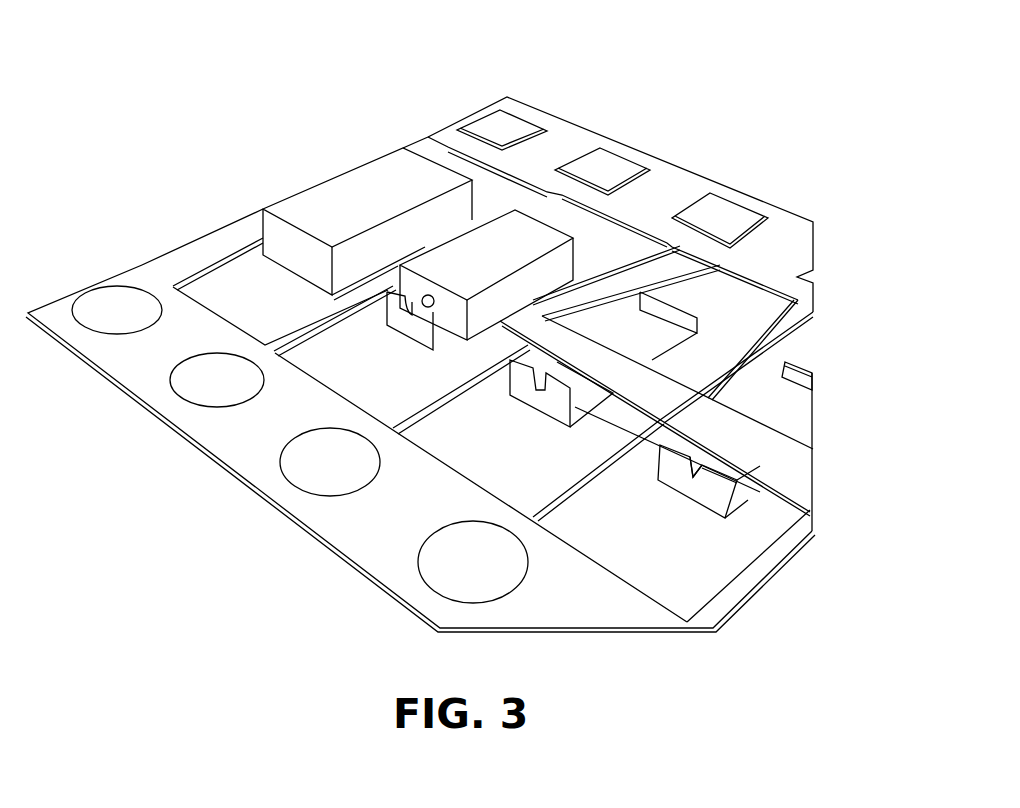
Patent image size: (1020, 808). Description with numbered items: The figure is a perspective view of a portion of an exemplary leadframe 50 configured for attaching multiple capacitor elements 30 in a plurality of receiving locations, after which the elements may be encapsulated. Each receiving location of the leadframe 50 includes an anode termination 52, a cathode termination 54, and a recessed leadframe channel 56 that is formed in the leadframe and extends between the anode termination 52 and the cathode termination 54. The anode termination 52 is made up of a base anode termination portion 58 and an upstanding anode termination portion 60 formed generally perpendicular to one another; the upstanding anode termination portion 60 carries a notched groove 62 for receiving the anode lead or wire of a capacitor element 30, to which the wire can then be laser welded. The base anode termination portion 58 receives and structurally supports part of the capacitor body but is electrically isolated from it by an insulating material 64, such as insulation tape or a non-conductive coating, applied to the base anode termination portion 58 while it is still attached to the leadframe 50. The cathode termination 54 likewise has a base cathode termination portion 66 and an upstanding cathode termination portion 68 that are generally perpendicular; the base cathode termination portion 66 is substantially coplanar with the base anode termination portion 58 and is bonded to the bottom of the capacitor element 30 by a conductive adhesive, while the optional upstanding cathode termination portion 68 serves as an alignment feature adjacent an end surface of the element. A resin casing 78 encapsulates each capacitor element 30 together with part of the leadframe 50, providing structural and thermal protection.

The capacitor element 30 is at (505, 242).
The leadframe 50 is at (138, 272).
The anode termination 52 is at (597, 425).
The cathode termination 54 is at (675, 343).
The recessed leadframe channel 56 is at (580, 348).
The base anode termination portion 58 is at (742, 503).
The upstanding anode termination portion 60 is at (663, 472).
The notched groove 62 is at (693, 472).
The insulating material 64 is at (705, 455).
The base cathode termination portion 66 is at (797, 417).
The upstanding cathode termination portion 68 is at (797, 378).
The resin casing 78 is at (345, 188).